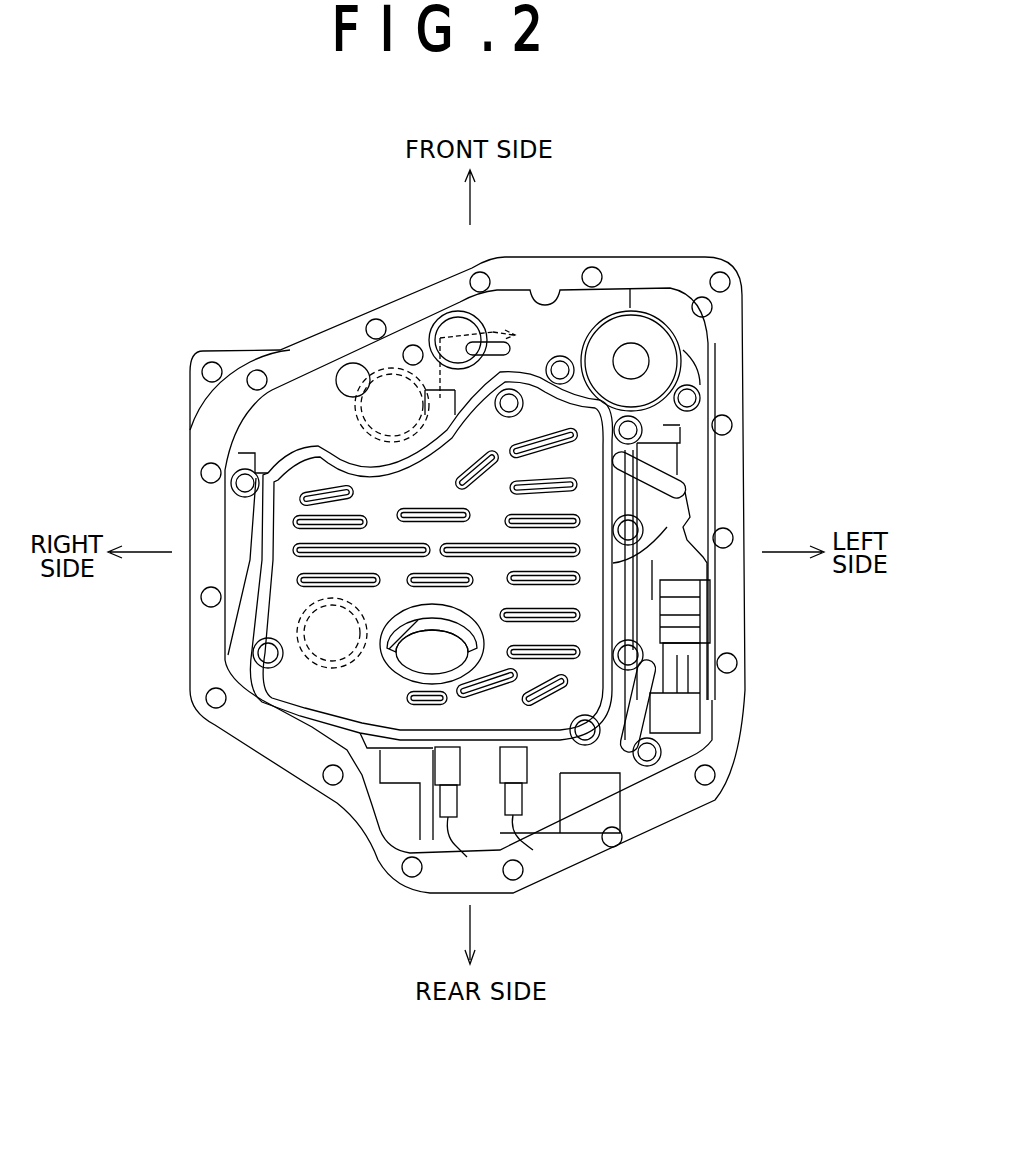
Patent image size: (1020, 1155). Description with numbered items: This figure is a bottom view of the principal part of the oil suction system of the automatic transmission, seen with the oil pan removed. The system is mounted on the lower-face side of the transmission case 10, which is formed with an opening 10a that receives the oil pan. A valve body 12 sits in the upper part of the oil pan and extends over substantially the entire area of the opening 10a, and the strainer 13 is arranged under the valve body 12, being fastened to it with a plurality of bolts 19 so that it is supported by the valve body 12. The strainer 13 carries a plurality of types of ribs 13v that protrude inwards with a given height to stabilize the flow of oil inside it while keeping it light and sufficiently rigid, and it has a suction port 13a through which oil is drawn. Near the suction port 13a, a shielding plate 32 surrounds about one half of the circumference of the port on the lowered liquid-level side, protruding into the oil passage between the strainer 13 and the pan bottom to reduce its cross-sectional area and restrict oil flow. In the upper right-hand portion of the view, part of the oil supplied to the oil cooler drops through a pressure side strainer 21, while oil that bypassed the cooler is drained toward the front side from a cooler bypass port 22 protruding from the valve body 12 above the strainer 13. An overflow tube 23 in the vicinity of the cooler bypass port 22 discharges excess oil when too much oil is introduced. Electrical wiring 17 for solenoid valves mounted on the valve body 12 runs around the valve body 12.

The transmission case 10 is at (748, 456).
The opening 10a is at (563, 285).
The valve body 12 is at (680, 423).
The strainer 13 is at (250, 538).
The ribs 13v is at (297, 550).
The suction port 13a is at (407, 660).
The electrical wiring 17 is at (655, 525).
The bolts 19 is at (515, 388).
The pressure side strainer 21 is at (682, 350).
The cooler bypass port 22 is at (413, 375).
The overflow tube 23 is at (430, 392).
The shielding plate 32 is at (497, 627).